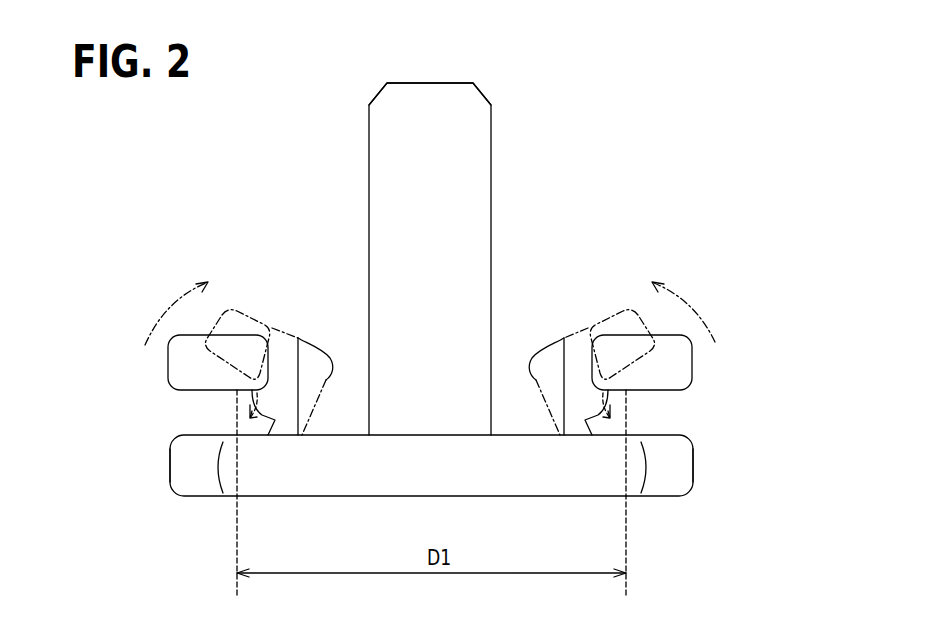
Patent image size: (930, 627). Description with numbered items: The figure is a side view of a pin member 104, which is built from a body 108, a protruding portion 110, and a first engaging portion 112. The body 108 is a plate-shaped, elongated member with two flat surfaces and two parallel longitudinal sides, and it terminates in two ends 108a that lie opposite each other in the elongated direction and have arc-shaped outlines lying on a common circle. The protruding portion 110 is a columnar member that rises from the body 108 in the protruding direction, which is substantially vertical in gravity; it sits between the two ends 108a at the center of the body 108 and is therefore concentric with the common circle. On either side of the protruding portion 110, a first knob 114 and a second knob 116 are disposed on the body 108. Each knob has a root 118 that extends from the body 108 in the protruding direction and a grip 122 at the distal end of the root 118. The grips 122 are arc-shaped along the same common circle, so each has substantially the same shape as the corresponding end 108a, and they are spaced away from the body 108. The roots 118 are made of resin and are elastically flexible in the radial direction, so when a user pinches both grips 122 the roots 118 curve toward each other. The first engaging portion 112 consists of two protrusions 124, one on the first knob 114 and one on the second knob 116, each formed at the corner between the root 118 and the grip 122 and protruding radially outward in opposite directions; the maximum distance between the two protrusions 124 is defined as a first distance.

The pin member 104 is at (513, 131).
The protruding portion 110 is at (492, 195).
The body 108 is at (675, 482).
The end 108a is at (170, 470).
The first engaging portion 112 is at (250, 417).
The first knob 114 is at (278, 363).
The second knob 116 is at (583, 345).
The root 118 is at (293, 393).
The grip 122 is at (168, 365).
The protrusion 124 is at (238, 394).